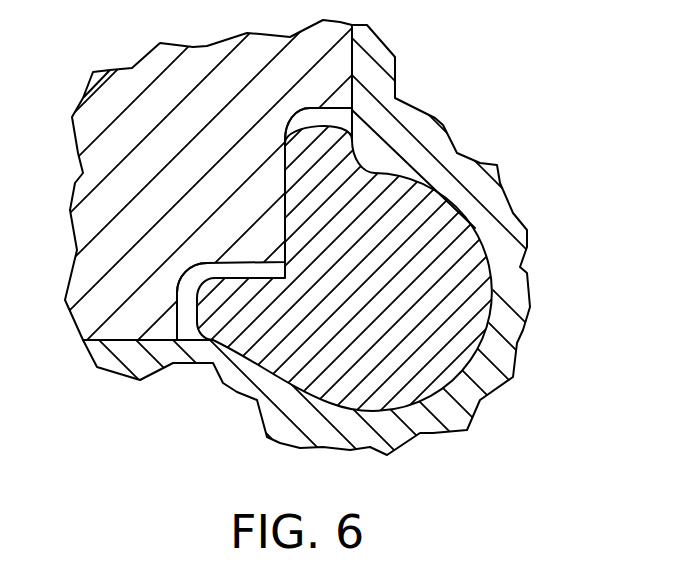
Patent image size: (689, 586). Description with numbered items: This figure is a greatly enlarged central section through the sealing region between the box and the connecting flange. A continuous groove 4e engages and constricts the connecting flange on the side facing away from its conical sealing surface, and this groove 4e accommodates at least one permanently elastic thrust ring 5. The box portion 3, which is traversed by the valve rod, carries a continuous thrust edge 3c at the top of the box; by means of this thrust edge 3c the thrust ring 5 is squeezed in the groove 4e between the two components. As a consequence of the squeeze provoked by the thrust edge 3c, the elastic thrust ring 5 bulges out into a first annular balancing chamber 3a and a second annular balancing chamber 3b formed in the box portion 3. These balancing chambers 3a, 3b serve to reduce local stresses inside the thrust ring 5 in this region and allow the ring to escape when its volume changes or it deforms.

The box portion 3 is at (190, 177).
The first annular balancing chamber 3a is at (178, 306).
The second annular balancing chamber 3b is at (333, 110).
The continuous thrust edge 3c is at (263, 235).
The thrust ring 5 is at (470, 228).
The continuous groove 4e is at (492, 283).